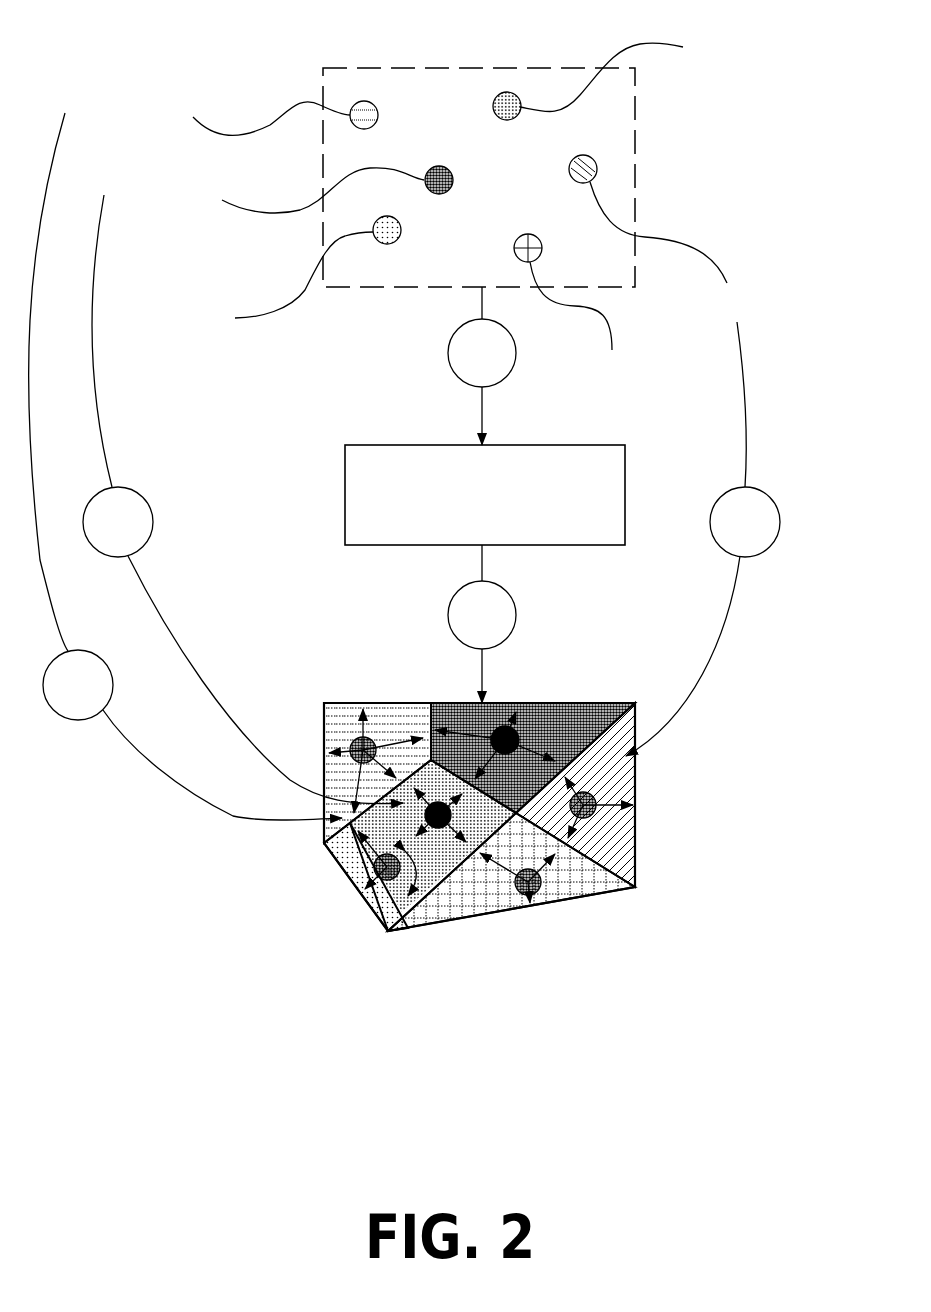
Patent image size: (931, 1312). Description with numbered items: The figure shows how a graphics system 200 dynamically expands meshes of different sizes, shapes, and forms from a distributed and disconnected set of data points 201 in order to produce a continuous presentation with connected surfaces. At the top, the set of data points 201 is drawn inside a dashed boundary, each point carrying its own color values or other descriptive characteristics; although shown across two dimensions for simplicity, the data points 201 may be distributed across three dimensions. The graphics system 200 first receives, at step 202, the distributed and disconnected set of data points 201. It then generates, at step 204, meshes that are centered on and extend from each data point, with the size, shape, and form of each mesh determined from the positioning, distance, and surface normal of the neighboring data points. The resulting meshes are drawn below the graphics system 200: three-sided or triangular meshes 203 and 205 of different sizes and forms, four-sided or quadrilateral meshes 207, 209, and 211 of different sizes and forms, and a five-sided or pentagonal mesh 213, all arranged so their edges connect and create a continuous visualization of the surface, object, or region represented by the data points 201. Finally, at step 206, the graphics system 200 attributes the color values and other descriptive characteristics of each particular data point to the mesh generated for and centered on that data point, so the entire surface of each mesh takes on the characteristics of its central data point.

The graphics system 200 is at (485, 495).
The distributed and disconnected set of data points 201 is at (496, 68).
The receiving step 202 is at (482, 366).
The triangular mesh 203 is at (637, 776).
The mesh generation step 204 is at (482, 624).
The triangular mesh 205 is at (497, 912).
The color attribution step 206 is at (404, 466).
The quadrilateral mesh 207 is at (548, 703).
The quadrilateral mesh 209 is at (345, 880).
The quadrilateral mesh 211 is at (408, 928).
The pentagonal mesh 213 is at (326, 703).